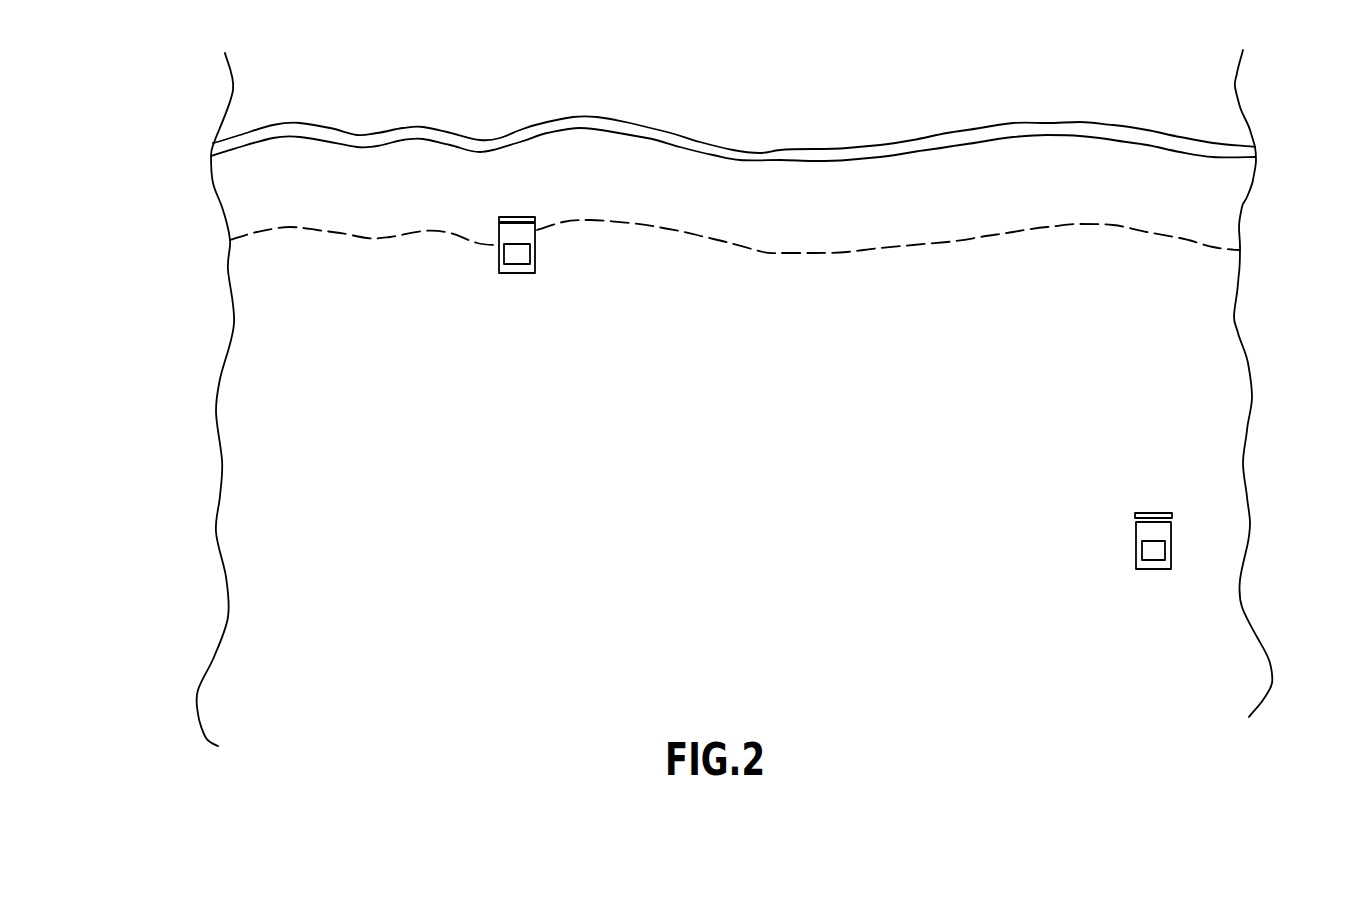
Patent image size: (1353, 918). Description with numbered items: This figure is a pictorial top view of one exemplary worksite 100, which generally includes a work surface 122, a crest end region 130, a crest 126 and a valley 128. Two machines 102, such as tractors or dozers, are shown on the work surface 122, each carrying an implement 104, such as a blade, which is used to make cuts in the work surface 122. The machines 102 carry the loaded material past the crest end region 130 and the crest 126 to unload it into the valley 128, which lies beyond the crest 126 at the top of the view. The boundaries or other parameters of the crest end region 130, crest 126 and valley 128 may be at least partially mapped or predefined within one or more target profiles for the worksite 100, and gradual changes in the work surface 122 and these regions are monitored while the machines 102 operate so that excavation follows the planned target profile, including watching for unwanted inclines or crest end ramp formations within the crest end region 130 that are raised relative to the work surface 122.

The worksite 100 is at (452, 669).
The machine 102 is at (517, 255).
The implement 104 is at (513, 216).
The work surface 122 is at (1213, 328).
The crest 126 is at (1237, 153).
The valley 128 is at (1218, 88).
The crest end region 130 is at (1218, 213).